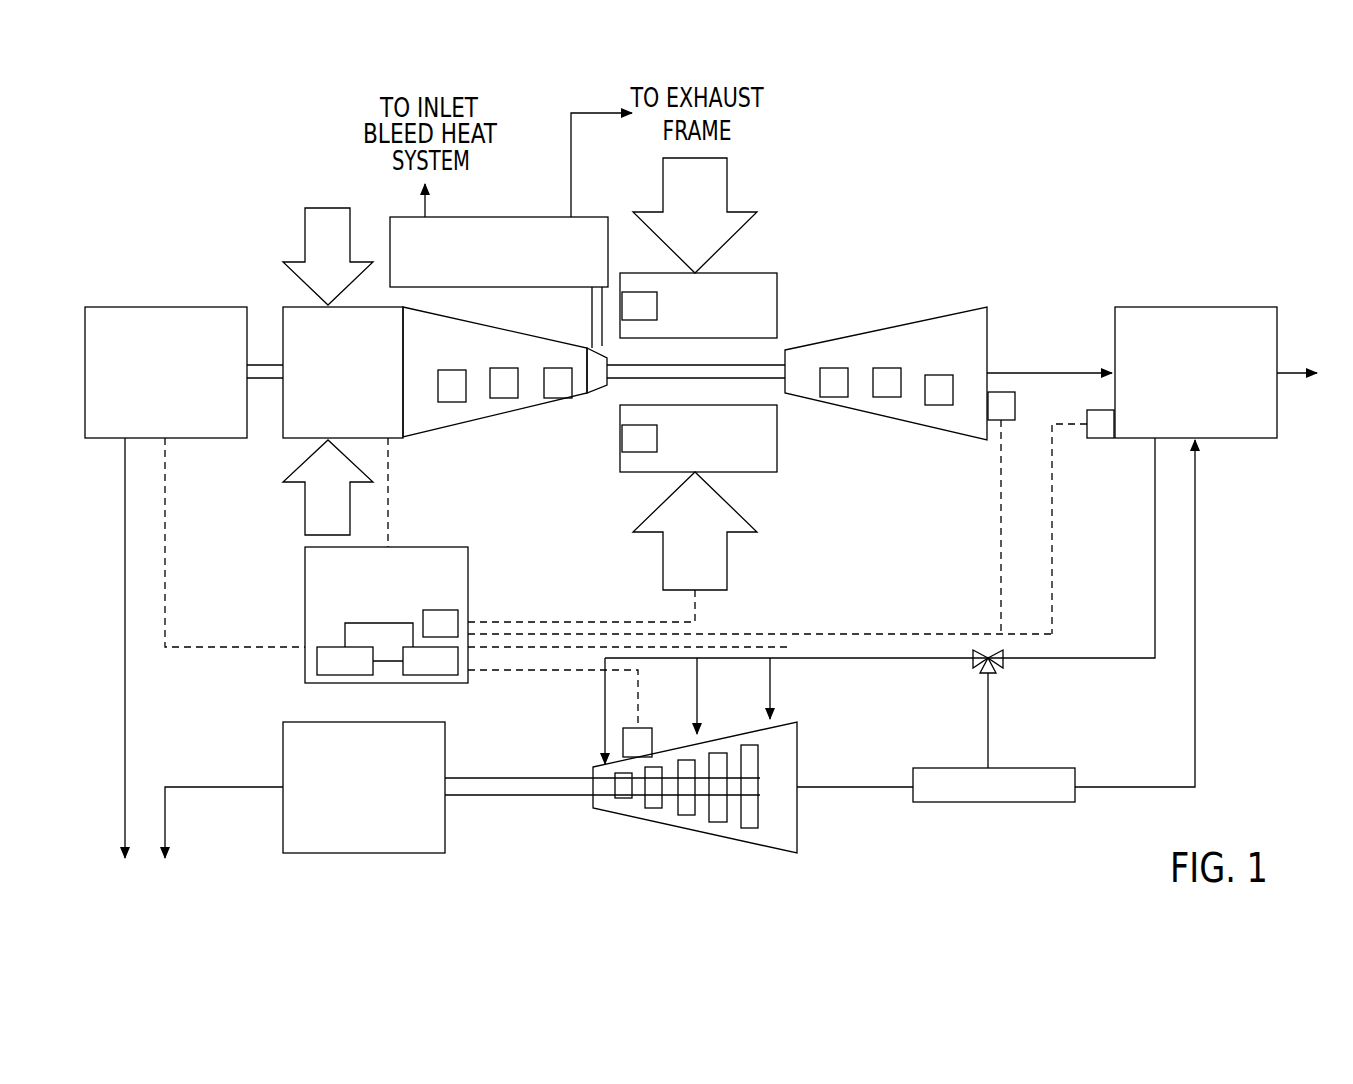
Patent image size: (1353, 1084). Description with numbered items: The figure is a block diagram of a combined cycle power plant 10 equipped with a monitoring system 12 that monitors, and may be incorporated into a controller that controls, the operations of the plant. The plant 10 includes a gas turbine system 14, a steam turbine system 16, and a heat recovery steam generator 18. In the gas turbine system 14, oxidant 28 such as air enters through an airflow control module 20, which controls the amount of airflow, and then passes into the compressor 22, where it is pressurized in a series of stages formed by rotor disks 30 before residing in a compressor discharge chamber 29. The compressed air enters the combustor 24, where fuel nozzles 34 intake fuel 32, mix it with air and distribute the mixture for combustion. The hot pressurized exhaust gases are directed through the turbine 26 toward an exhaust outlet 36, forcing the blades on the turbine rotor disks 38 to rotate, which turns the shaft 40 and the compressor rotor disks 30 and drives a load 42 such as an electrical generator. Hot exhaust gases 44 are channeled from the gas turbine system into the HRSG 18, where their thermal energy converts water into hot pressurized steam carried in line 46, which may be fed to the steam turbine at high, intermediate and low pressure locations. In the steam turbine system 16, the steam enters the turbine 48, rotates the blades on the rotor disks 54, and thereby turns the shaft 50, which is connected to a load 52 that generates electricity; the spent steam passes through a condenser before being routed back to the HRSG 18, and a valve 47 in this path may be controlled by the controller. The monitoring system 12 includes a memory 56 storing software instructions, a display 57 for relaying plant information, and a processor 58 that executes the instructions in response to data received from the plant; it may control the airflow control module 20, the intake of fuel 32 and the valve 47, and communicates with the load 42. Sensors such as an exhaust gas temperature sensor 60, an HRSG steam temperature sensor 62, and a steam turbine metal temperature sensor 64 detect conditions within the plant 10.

The combined cycle power plant 10 is at (1046, 185).
The monitoring system 12 is at (450, 547).
The gas turbine system 14 is at (368, 216).
The steam turbine system 16 is at (872, 853).
The heat recovery steam generator 18 is at (1193, 307).
The airflow control module 20 is at (305, 306).
The compressor 22 is at (415, 438).
The combustor 24 is at (777, 302).
The turbine 26 is at (886, 331).
The oxidant 28 is at (305, 233).
The compressor discharge chamber 29 is at (598, 395).
The rotor disks 30 is at (452, 402).
The fuel 32 is at (663, 186).
The fuel nozzles 34 is at (657, 301).
The exhaust outlet 36 is at (987, 330).
The turbine rotor disks 38 is at (834, 397).
The shaft 40 is at (270, 380).
The load 42 is at (165, 307).
The hot exhaust gases 44 is at (1045, 365).
The steam line 46 is at (883, 660).
The valve 47 is at (1004, 663).
The steam turbine 48 is at (732, 737).
The shaft 50 is at (531, 797).
The load 52 is at (365, 853).
The turbine rotor disks 54 is at (623, 798).
The memory 56 is at (343, 675).
The display 57 is at (445, 610).
The processor 58 is at (430, 675).
The exhaust gas temperature sensor 60 is at (1015, 403).
The HRSG steam temperature sensor 62 is at (1097, 438).
The steam turbine metal temperature sensor 64 is at (652, 743).